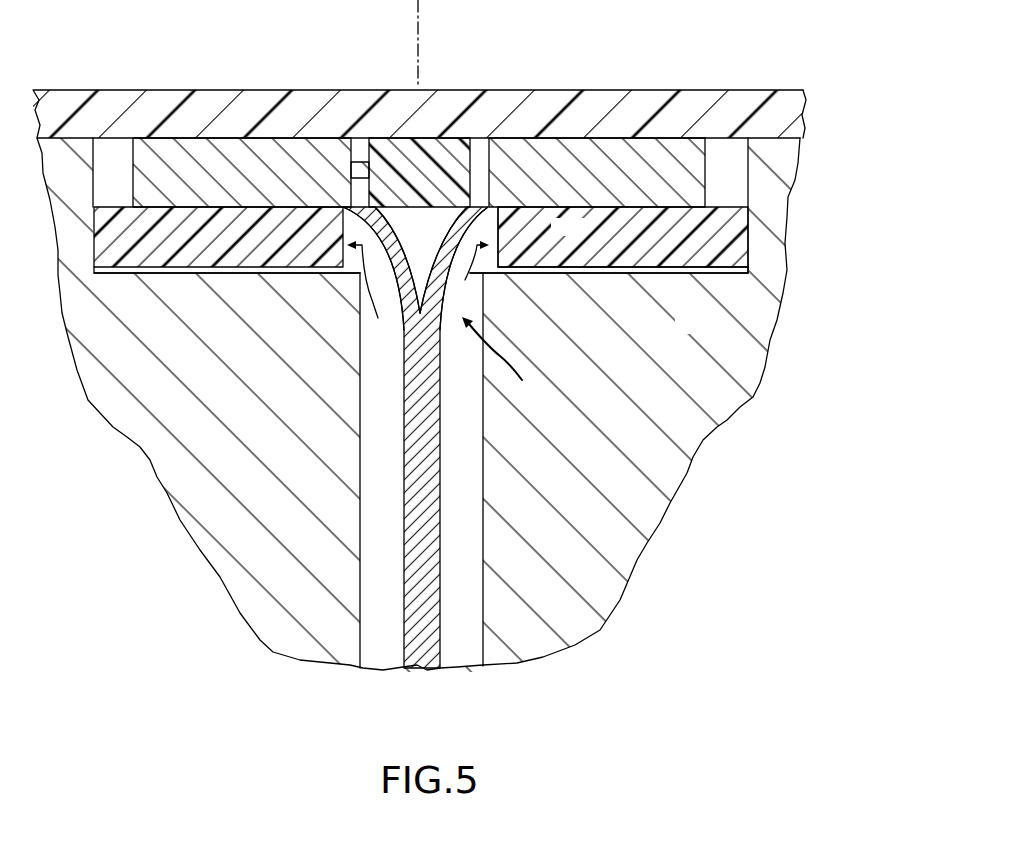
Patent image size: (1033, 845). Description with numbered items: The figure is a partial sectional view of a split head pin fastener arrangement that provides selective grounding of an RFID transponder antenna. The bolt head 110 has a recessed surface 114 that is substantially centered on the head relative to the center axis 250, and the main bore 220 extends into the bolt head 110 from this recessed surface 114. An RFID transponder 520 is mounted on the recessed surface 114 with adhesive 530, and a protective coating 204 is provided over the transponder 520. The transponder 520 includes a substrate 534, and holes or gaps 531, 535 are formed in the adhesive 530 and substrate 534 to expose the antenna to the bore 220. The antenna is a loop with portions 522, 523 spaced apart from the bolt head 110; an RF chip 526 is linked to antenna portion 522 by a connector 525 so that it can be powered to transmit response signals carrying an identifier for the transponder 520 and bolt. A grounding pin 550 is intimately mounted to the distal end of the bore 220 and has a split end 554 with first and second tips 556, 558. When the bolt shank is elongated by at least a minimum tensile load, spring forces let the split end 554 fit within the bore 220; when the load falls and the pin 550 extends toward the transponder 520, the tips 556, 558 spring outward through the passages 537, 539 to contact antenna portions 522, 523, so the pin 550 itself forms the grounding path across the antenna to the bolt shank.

The bolt head 110 is at (697, 453).
The recessed surface 114 is at (321, 271).
The protective coating 204 is at (805, 108).
The main bore 220 is at (360, 627).
The center axis 250 is at (418, 43).
The RFID transponder 520 is at (757, 197).
The antenna portion 522 is at (215, 136).
The antenna portion 523 is at (710, 160).
The connector 525 is at (353, 181).
The RF chip 526 is at (472, 161).
The adhesive 530 is at (680, 270).
The hole or gap 531 is at (540, 273).
The substrate 534 is at (640, 263).
The hole or gap 535 is at (497, 227).
The right flow passage 537 is at (468, 274).
The left flow passage 539 is at (371, 294).
The grounding pin 550 is at (442, 603).
The split end 554 is at (509, 362).
The first tip 556 is at (460, 224).
The second tip 558 is at (398, 242).